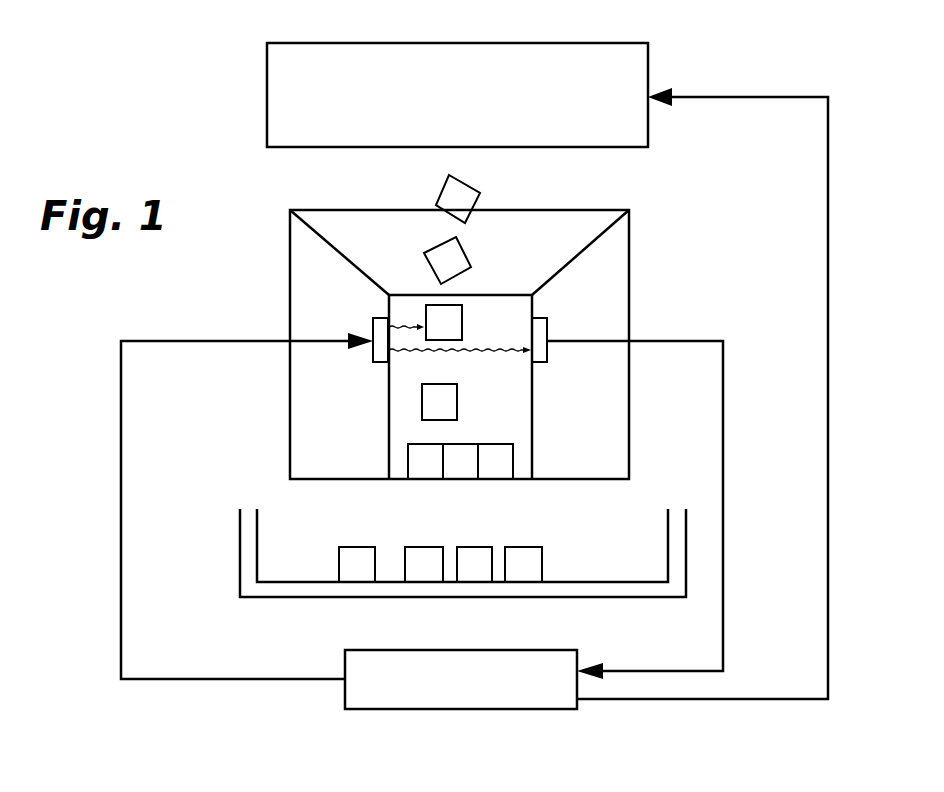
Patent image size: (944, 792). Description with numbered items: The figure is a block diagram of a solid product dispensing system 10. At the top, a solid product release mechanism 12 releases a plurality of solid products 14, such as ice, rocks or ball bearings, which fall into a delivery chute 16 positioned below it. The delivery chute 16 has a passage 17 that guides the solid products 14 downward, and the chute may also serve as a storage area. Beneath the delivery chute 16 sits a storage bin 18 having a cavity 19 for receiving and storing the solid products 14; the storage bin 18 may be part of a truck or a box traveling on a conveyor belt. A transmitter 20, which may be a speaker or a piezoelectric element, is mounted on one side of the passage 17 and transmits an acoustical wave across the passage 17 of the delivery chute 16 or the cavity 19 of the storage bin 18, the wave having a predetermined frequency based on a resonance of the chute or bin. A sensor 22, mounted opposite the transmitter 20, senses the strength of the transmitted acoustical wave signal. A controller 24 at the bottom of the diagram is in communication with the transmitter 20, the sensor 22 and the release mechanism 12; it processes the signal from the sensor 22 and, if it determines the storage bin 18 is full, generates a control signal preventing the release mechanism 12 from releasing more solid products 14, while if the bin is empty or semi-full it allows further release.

The system 10 is at (106, 57).
The solid product release mechanism 12 is at (267, 98).
The solid products 14 is at (436, 192).
The delivery chute 16 is at (631, 273).
The passage 17 is at (500, 420).
The storage bin 18 is at (240, 560).
The cavity 19 is at (518, 527).
The transmitter 20 is at (373, 330).
The sensor 22 is at (547, 330).
The controller 24 is at (345, 668).